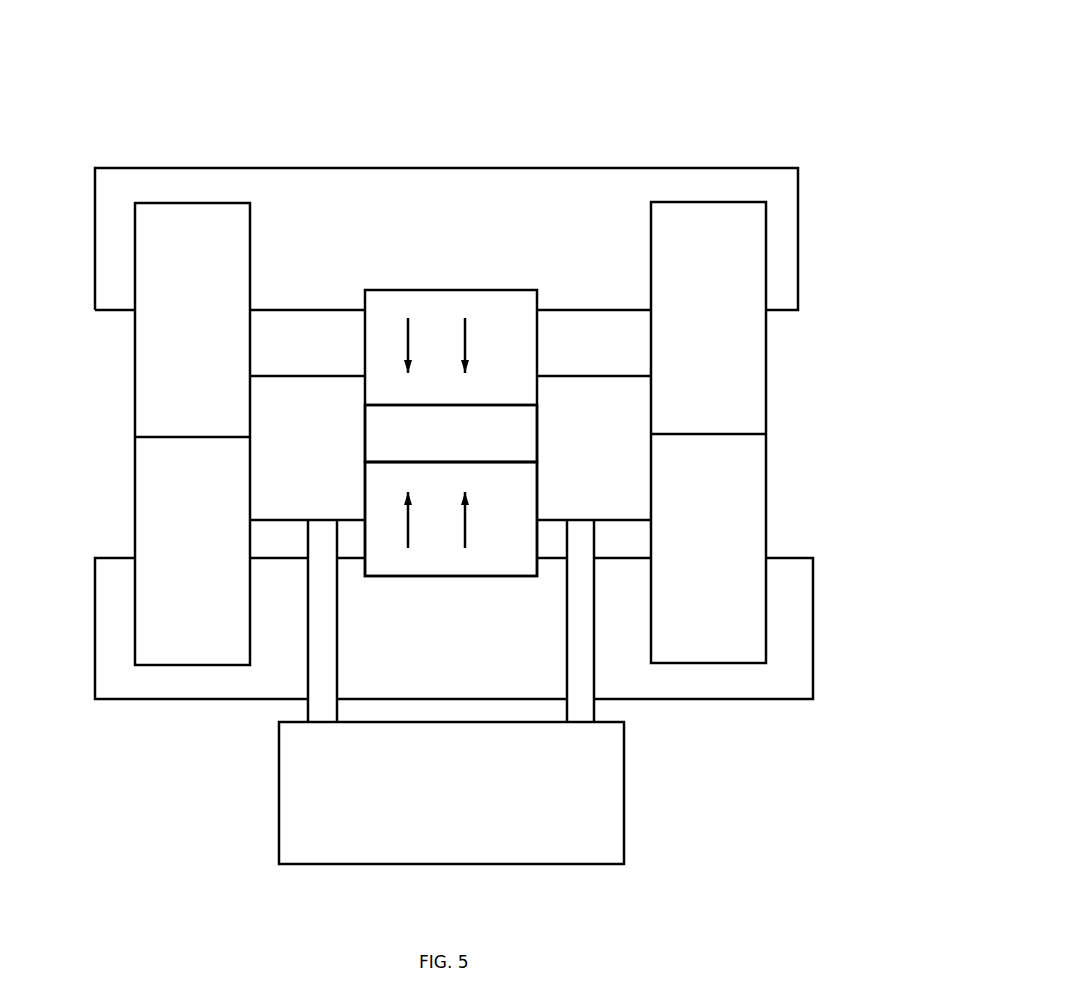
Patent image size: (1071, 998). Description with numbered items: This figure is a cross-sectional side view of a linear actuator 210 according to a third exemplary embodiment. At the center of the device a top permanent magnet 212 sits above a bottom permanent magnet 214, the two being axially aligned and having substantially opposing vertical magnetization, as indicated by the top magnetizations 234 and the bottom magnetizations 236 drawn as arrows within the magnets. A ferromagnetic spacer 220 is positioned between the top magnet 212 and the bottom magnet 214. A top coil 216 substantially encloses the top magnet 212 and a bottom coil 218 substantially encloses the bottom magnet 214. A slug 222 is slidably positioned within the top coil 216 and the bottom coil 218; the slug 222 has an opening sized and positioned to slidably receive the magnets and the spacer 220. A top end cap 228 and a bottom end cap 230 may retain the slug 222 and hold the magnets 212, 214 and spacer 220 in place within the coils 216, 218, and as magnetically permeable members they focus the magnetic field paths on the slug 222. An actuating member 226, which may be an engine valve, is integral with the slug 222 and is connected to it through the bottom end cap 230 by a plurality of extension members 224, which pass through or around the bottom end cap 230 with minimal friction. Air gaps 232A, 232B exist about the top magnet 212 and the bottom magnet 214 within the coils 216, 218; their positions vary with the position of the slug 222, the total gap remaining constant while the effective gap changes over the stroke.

The linear actuator 210 is at (430, 462).
The top permanent magnet 212 is at (450, 290).
The bottom permanent magnet 214 is at (423, 579).
The top coil 216 is at (192, 203).
The bottom coil 218 is at (725, 665).
The ferromagnetic spacer 220 is at (480, 404).
The slug 222 is at (337, 375).
The extension members 224 is at (307, 668).
The actuating member 226 is at (279, 838).
The top end cap 228 is at (483, 167).
The bottom end cap 230 is at (678, 700).
The air gap 232A is at (270, 355).
The air gap 232B is at (271, 543).
The top magnetizations 234 is at (405, 345).
The bottom magnetizations 236 is at (410, 525).